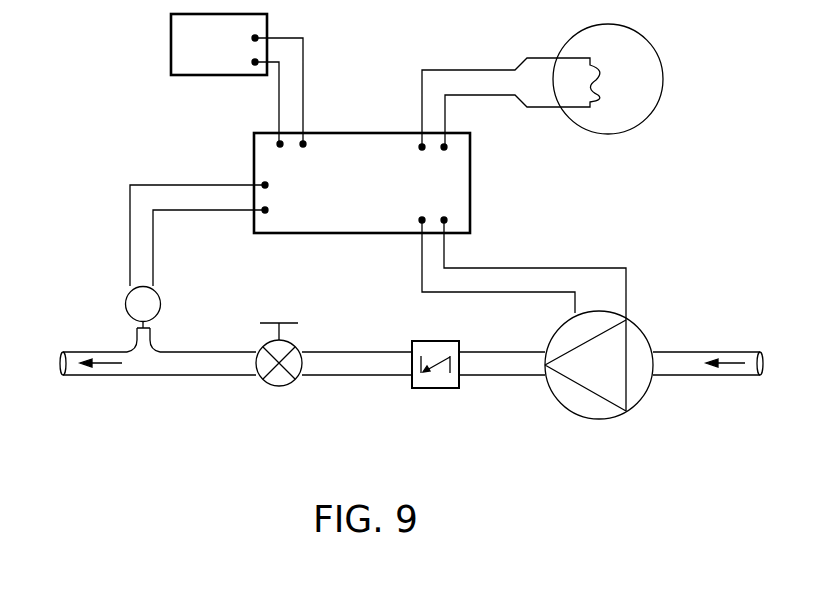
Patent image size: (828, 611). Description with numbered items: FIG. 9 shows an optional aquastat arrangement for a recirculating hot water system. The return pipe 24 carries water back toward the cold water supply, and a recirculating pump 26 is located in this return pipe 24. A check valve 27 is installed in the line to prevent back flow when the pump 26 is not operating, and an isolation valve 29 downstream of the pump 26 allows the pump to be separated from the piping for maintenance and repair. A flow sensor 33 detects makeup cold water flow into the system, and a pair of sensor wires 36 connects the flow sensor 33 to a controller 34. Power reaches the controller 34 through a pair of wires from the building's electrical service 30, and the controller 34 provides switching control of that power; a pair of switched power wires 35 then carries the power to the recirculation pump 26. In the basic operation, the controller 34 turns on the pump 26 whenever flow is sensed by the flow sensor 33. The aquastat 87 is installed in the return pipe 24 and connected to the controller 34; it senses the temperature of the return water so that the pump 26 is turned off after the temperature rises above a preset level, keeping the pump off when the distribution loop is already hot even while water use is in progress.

The return pipe 24 is at (105, 376).
The recirculating pump 26 is at (613, 376).
The check valve 27 is at (457, 391).
The isolation valve 29 is at (290, 386).
The electrical service 30 is at (460, 93).
The flow sensor 33 is at (232, 51).
The controller 34 is at (348, 214).
The switched power wires 35 is at (536, 291).
The sensor wires 36 is at (280, 106).
The aquastat 87 is at (126, 304).